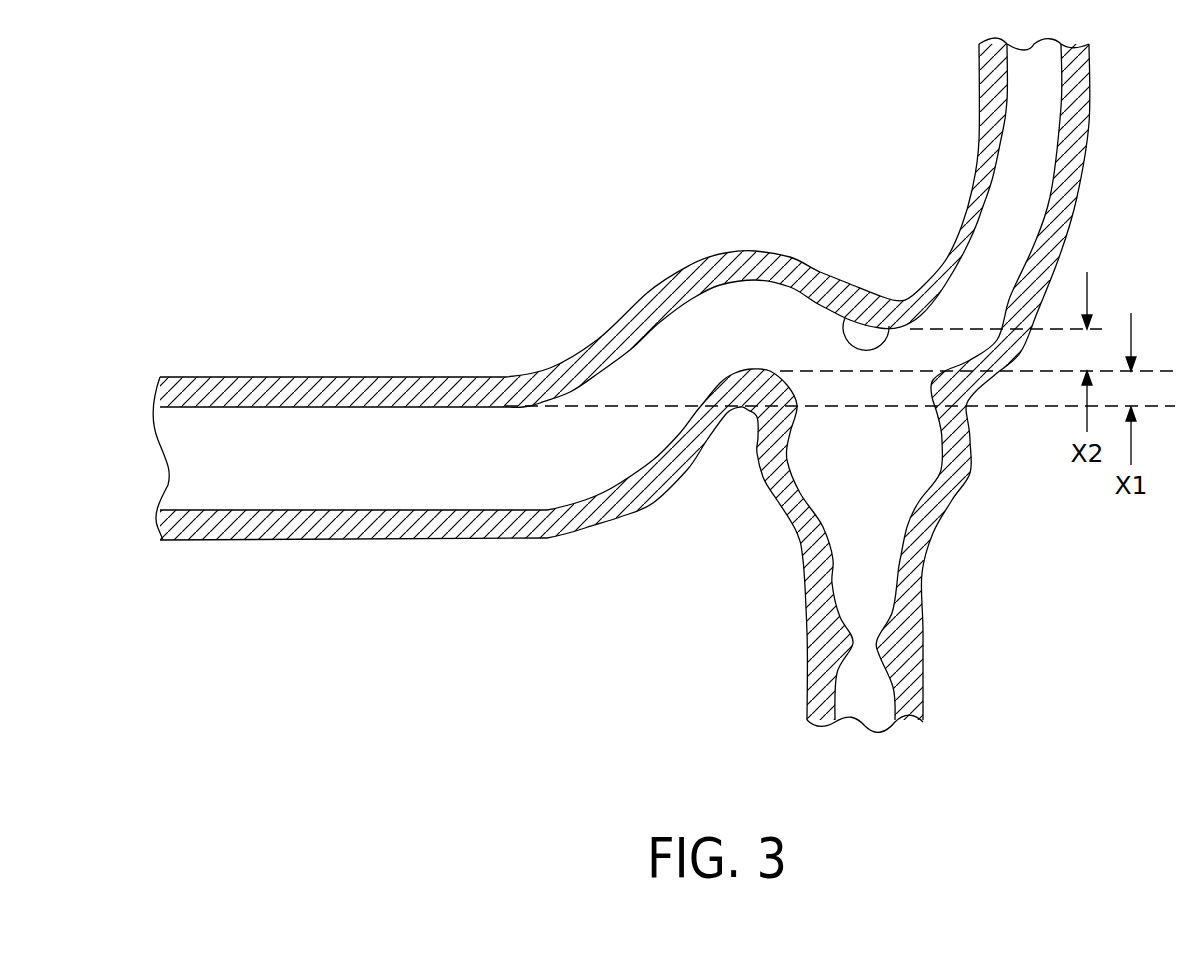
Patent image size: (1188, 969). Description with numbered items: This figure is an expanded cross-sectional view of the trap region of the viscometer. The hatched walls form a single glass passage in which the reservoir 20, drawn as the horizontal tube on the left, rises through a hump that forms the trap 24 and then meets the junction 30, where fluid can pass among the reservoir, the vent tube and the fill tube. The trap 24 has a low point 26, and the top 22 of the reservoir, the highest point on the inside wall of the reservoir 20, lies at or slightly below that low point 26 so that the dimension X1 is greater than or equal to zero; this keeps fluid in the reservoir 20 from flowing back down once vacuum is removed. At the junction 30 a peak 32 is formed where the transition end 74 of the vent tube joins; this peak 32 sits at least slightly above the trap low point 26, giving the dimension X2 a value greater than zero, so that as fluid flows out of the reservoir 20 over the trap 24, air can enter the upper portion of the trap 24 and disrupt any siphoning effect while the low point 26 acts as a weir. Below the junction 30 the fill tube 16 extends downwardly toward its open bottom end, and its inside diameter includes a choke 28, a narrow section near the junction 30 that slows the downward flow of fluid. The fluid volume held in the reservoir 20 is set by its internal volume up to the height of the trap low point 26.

The fill tube 16 is at (873, 711).
The reservoir 20 is at (335, 435).
The top of the reservoir 22 is at (510, 407).
The trap 24 is at (760, 307).
The low point 26 is at (763, 371).
The choke 28 is at (863, 637).
The junction 30 is at (907, 467).
The peak 32 is at (843, 313).
The transition end 74 is at (1037, 137).